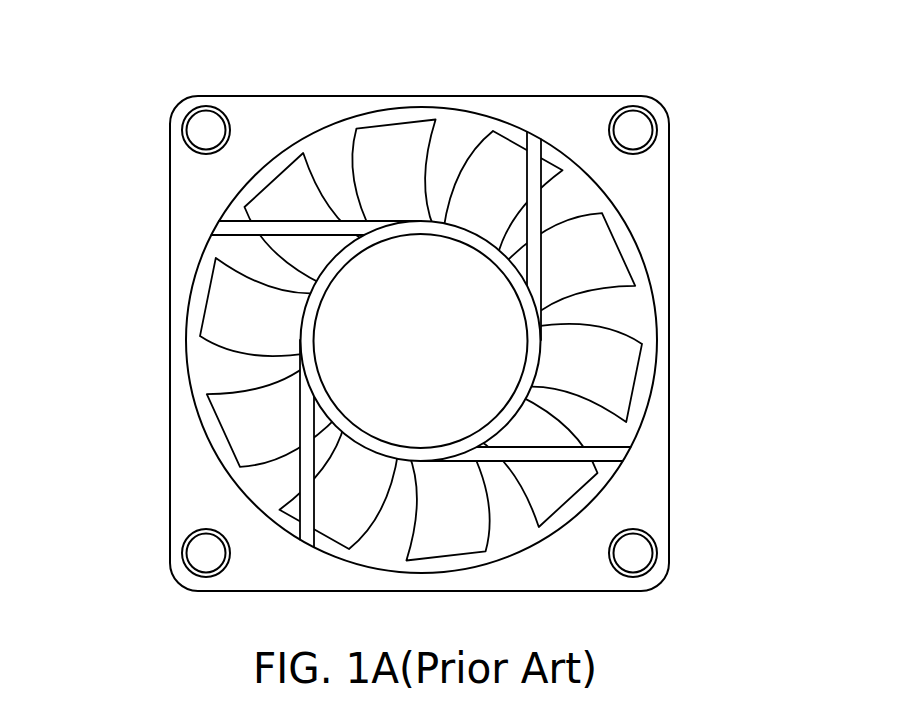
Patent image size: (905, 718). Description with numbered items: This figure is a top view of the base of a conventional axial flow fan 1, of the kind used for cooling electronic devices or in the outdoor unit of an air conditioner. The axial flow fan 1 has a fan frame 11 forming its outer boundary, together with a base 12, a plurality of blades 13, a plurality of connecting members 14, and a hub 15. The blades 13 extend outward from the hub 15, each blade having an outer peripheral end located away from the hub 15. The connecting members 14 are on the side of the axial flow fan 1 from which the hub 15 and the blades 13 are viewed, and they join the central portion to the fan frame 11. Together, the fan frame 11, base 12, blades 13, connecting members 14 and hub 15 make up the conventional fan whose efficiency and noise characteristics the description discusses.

The axial flow fan 1 is at (416, 295).
The fan frame 11 is at (555, 110).
The base 12 is at (333, 359).
The blades 13 is at (618, 262).
The connecting members 14 is at (555, 455).
The hub 15 is at (570, 372).